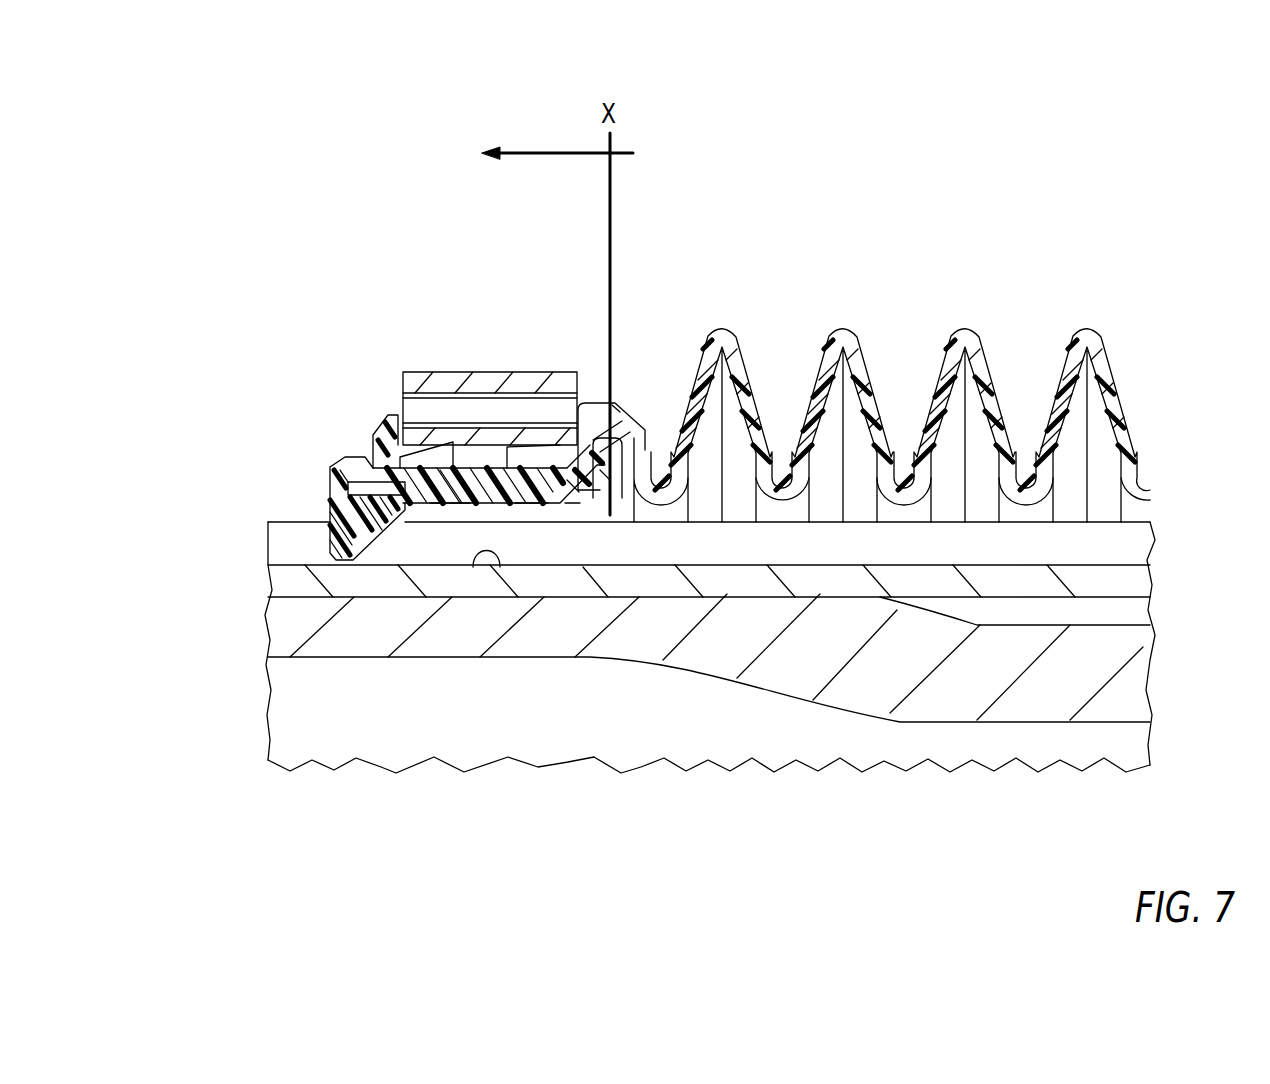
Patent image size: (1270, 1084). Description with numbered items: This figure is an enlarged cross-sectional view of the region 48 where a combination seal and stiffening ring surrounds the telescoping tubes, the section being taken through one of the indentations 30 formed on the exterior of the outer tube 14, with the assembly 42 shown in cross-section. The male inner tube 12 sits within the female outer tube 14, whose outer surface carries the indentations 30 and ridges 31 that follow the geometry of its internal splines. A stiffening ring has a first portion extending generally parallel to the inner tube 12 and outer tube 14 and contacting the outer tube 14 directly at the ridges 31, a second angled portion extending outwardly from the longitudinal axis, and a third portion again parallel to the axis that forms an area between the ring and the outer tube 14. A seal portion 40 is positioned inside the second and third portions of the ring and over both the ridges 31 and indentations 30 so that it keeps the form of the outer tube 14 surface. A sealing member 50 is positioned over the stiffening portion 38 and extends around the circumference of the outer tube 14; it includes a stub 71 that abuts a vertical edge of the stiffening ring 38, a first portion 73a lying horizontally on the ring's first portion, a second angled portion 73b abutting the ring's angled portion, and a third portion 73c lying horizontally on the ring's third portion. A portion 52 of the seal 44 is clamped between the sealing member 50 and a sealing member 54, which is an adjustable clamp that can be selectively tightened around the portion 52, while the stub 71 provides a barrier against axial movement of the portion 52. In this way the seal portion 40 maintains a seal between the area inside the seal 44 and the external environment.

The region 48 is at (181, 232).
The substrate 42 is at (1178, 541).
The outer tube 14 is at (328, 538).
The ridges 31 is at (290, 500).
The stiffening ring 38 is at (417, 505).
The inner tube 12 is at (298, 618).
The seal portion 40 is at (358, 560).
The sealing member 50 is at (363, 475).
The stub 71 is at (328, 490).
The sealing member 54 is at (428, 382).
The portion of the seal 52 is at (428, 455).
The first portion 73a is at (475, 465).
The second angled portion 73b is at (565, 495).
The third portion 73c is at (620, 457).
The seal 44 is at (878, 365).
The indentations 30 is at (500, 567).